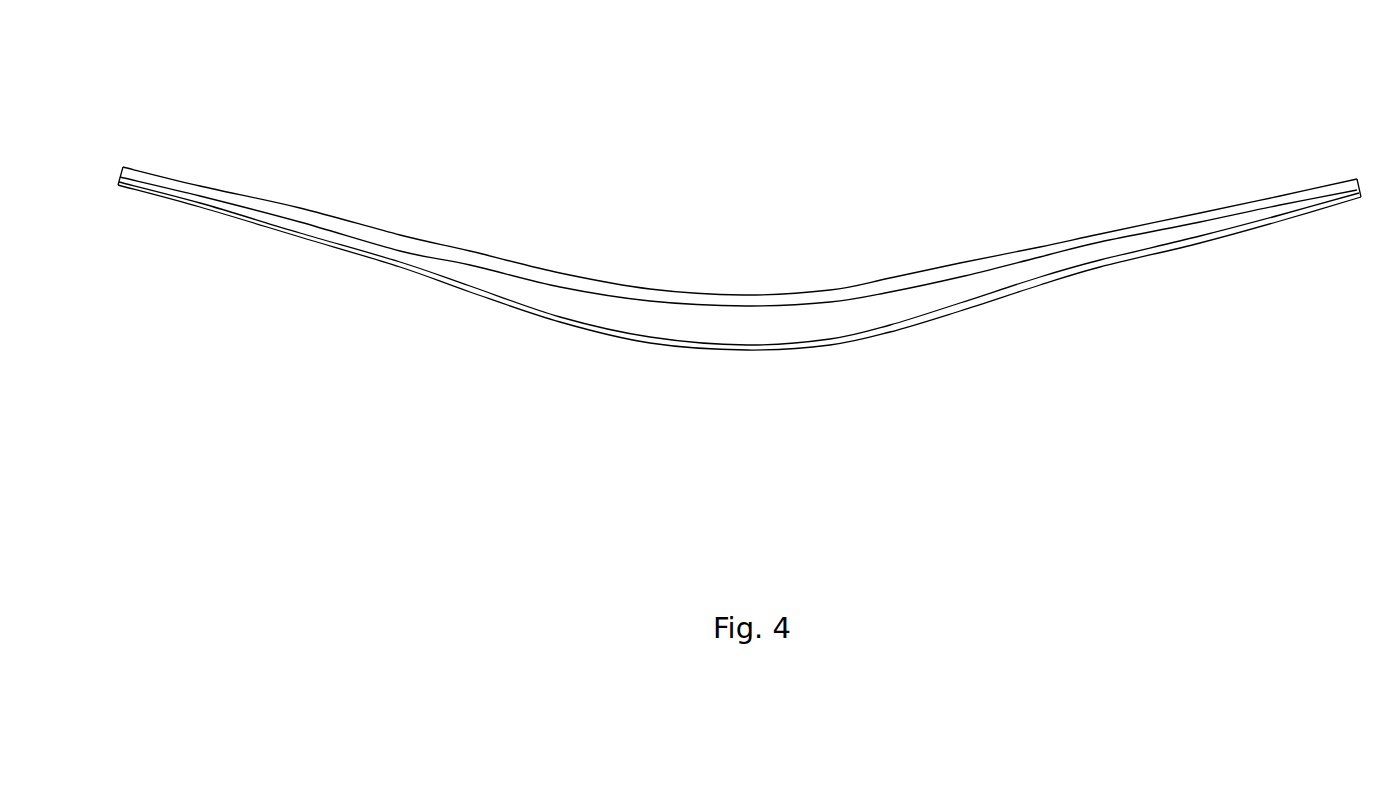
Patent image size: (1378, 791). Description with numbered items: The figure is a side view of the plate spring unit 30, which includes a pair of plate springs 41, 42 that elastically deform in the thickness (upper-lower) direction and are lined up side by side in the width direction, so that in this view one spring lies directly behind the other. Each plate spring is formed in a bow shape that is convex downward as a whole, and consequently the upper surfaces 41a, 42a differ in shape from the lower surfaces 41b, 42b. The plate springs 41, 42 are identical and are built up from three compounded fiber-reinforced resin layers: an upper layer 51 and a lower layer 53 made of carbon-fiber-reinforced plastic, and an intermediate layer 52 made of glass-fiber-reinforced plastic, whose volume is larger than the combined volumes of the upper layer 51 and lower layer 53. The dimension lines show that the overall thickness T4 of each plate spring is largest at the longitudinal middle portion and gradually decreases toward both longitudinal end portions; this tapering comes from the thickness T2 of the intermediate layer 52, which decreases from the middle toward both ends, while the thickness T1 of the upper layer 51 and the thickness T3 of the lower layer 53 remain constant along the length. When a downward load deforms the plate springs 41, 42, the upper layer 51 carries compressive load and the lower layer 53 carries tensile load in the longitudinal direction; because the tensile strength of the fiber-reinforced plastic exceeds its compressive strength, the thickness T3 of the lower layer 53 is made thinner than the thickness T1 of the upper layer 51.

The plate spring unit 30 is at (420, 150).
The plate spring 41 is at (1002, 253).
The plate spring 42 is at (739, 304).
The upper surface of plate spring 41 41a is at (740, 229).
The upper surface of plate spring 42 42a is at (447, 242).
The lower surface of plate spring 41 41b is at (739, 276).
The lower surface of plate spring 42 42b is at (442, 282).
The upper layer 51 is at (858, 287).
The intermediate layer 52 is at (698, 330).
The lower layer 53 is at (860, 340).
The thickness of upper layer T1 is at (577, 300).
The thickness of intermediate layer T2 is at (627, 297).
The thickness of lower layer T3 is at (533, 288).
The thickness of plate spring T4 is at (1337, 230).